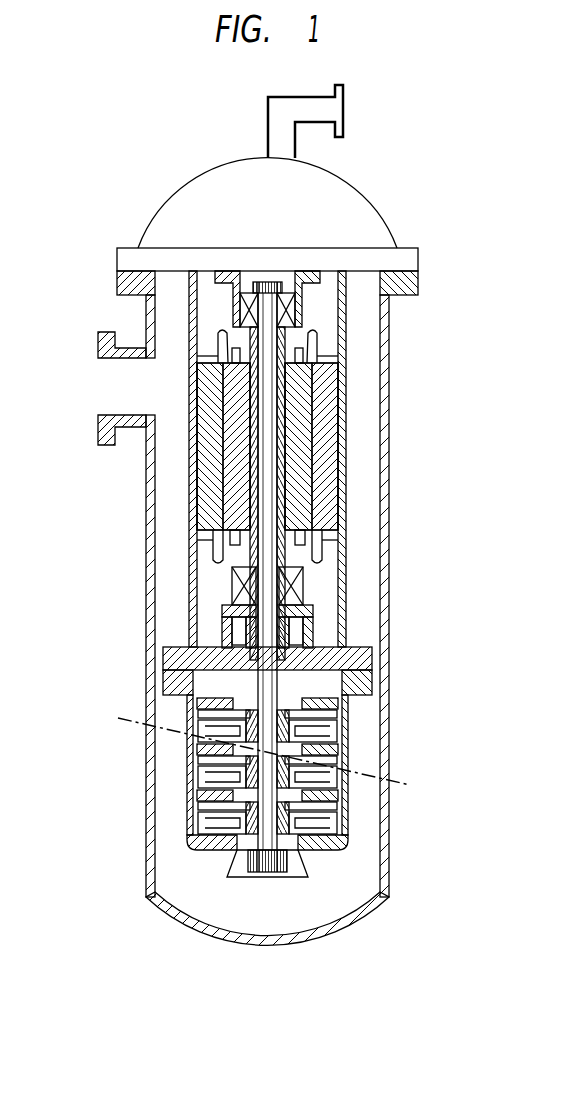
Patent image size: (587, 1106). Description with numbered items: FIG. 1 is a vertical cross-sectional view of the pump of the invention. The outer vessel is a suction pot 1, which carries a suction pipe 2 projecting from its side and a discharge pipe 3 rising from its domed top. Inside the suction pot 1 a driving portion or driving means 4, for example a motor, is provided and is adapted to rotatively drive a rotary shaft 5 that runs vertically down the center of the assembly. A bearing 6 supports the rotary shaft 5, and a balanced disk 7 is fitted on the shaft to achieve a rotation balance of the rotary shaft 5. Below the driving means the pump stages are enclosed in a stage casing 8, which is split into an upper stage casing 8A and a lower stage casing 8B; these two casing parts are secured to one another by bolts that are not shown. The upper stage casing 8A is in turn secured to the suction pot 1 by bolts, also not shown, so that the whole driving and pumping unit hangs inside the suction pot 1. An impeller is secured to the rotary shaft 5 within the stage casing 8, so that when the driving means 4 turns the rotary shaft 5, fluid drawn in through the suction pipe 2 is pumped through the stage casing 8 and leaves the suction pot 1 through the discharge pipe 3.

The suction pot 1 is at (391, 443).
The suction pipe 2 is at (118, 377).
The discharge pipe 3 is at (327, 108).
The stator 4 is at (325, 492).
The rotary shaft 5 is at (255, 853).
The bearing 6 is at (300, 314).
The balanced disk 7 is at (314, 636).
The stage casing 8 is at (316, 560).
The upper stage casing 8A is at (346, 395).
The lower stage casing 8B is at (346, 728).